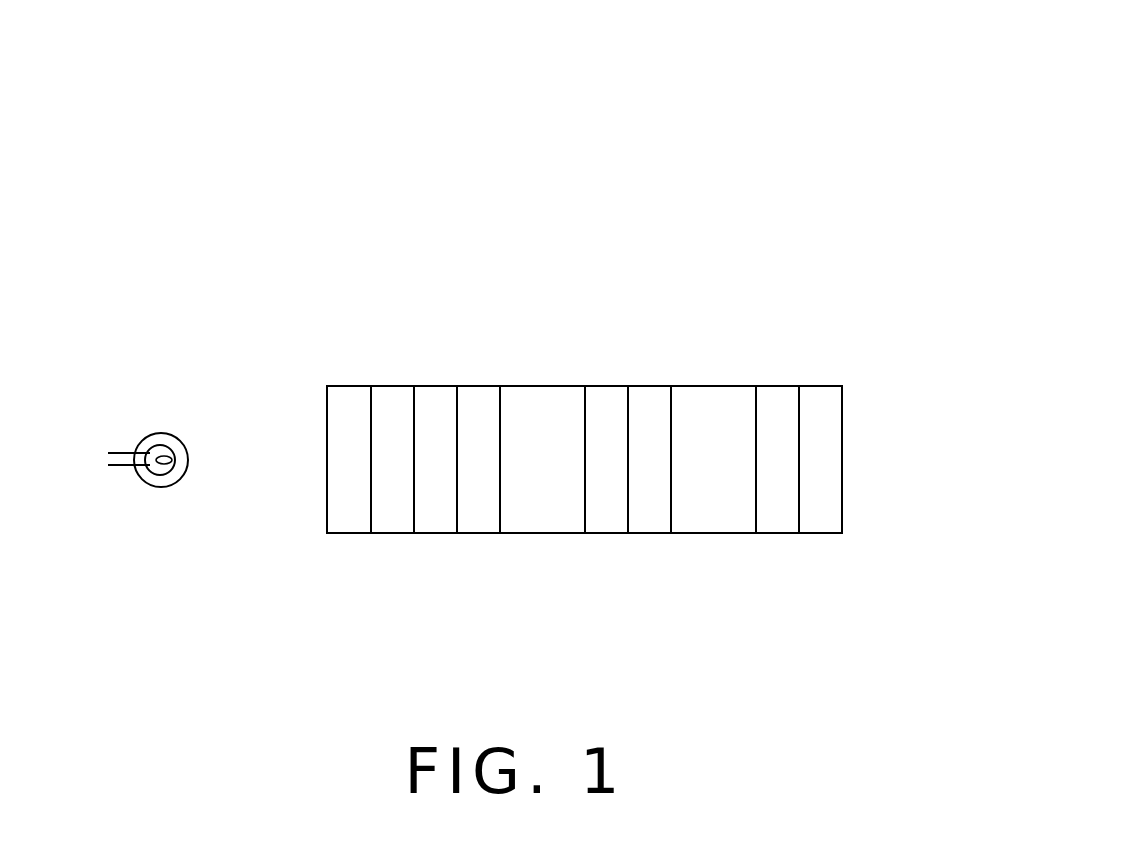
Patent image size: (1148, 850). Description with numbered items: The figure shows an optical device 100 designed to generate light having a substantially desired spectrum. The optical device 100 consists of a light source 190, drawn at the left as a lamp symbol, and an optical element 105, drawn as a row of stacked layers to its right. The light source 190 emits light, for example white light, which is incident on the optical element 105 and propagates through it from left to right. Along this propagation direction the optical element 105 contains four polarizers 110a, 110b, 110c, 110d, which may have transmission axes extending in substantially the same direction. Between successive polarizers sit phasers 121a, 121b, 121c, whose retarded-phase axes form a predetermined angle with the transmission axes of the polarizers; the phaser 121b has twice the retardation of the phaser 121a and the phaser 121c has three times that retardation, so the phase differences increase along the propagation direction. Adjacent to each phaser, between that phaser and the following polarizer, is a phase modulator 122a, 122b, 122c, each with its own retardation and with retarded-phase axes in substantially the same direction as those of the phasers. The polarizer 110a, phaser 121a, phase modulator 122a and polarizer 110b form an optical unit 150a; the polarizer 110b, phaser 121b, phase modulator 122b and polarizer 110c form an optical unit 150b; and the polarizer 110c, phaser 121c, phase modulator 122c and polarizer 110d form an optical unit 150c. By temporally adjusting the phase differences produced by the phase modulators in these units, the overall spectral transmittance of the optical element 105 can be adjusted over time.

The optical device 100 is at (955, 55).
The optical element 105 is at (865, 228).
The polarizer 110a is at (353, 386).
The polarizer 110b is at (496, 386).
The polarizer 110c is at (666, 386).
The polarizer 110d is at (837, 386).
The phaser 121a is at (403, 386).
The phaser 121b is at (558, 386).
The phaser 121c is at (732, 386).
The phase modulator 122a is at (438, 386).
The phase modulator 122b is at (612, 386).
The phase modulator 122c is at (782, 386).
The optical unit 150a is at (478, 550).
The optical unit 150b is at (649, 550).
The optical unit 150c is at (820, 550).
The light source 190 is at (160, 487).